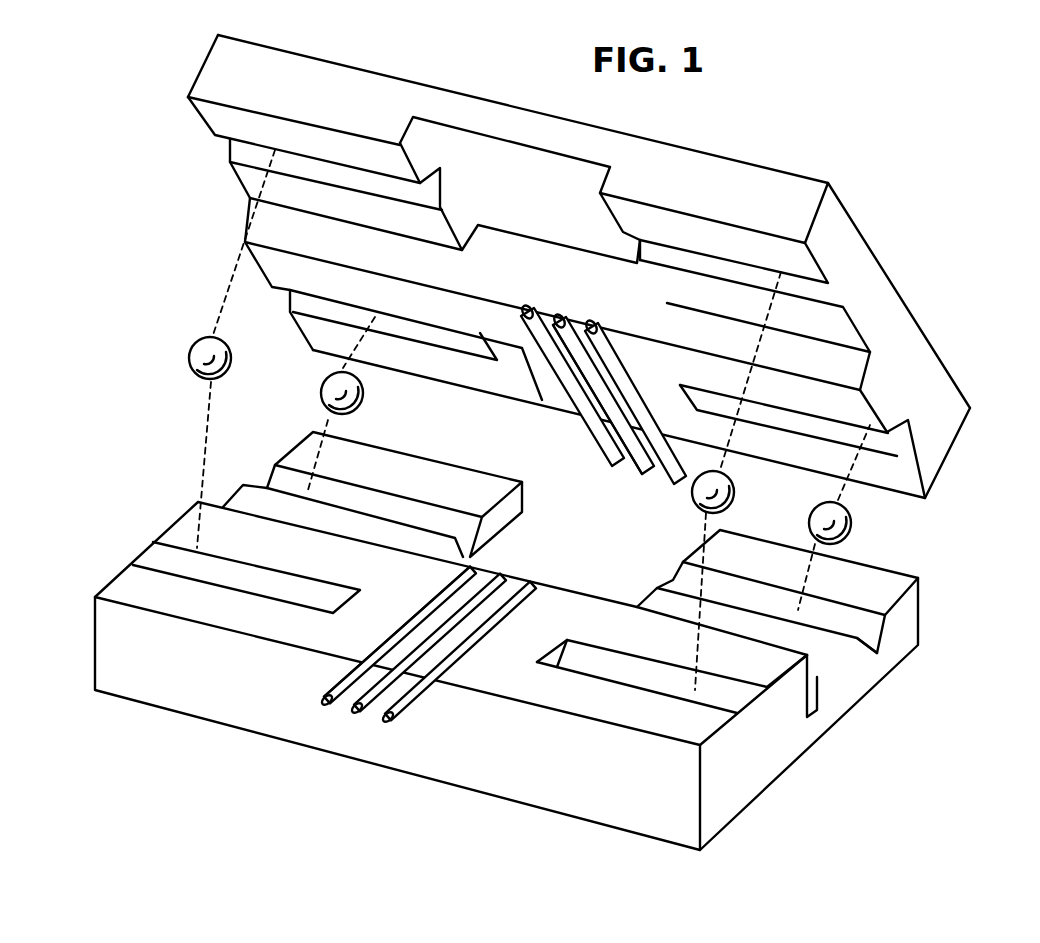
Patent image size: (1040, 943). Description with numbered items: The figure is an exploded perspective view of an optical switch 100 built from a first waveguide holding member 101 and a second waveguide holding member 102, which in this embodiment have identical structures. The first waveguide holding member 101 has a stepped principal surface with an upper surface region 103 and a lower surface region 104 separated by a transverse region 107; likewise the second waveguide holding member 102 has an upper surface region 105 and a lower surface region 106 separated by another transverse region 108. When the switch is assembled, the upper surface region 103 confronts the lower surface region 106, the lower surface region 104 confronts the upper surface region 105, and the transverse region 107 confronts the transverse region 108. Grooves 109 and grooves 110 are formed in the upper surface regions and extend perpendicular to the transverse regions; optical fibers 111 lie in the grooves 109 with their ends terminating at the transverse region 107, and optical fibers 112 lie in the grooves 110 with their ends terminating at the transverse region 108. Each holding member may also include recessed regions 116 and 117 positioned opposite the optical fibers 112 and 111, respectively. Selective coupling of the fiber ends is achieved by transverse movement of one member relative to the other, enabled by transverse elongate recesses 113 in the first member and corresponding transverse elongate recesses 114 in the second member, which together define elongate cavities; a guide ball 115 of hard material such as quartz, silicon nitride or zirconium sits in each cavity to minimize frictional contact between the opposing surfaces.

The optical switch 100 is at (782, 100).
The first waveguide holding member 101 is at (625, 818).
The second waveguide holding member 102 is at (913, 358).
The upper surface region 103 is at (168, 604).
The lower surface region 104 is at (900, 577).
The upper surface region 105 is at (333, 338).
The lower surface region 106 is at (217, 115).
The transverse region 107 is at (813, 712).
The transverse region 108 is at (885, 323).
The grooves 109 is at (410, 704).
The grooves 110 is at (525, 312).
The optical fibers 111 is at (325, 704).
The optical fibers 112 is at (595, 442).
The transverse elongate recesses 113 is at (273, 481).
The transverse elongate recesses 114 is at (248, 150).
The guide ball 115 is at (192, 336).
The recessed region 116 is at (575, 548).
The recessed region 117 is at (550, 197).